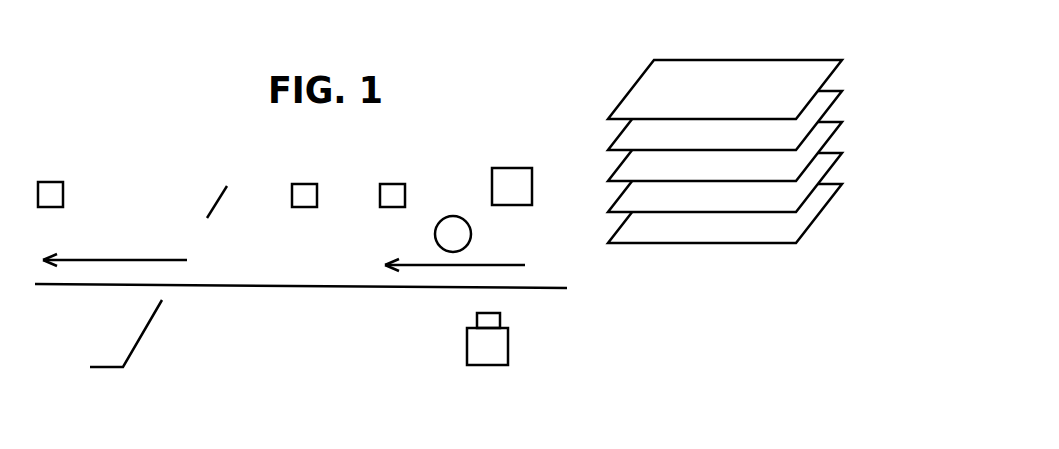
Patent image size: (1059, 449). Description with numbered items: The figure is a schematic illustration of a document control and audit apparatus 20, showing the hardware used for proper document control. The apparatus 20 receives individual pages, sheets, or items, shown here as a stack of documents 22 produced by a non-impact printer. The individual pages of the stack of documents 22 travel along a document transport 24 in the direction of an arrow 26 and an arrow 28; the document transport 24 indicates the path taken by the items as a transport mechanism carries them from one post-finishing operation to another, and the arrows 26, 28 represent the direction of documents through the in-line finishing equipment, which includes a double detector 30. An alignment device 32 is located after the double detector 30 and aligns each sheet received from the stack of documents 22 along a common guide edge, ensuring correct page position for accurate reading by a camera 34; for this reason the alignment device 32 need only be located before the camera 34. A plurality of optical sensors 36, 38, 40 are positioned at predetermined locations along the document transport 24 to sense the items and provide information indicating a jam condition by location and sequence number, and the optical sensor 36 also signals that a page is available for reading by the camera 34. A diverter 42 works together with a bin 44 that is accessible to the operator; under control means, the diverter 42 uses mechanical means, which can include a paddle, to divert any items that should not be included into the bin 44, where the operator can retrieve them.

The document control and audit apparatus 20 is at (171, 111).
The stack of documents 22 is at (787, 56).
The document transport 24 is at (542, 293).
The arrow 26 is at (495, 262).
The arrow 28 is at (82, 256).
The double detector 30 is at (537, 148).
The alignment device 32 is at (462, 216).
The camera 34 is at (467, 345).
The optical sensor 36 is at (395, 184).
The optical sensor 38 is at (307, 184).
The optical sensor 40 is at (87, 154).
The diverter 42 is at (218, 193).
The bin 44 is at (150, 325).